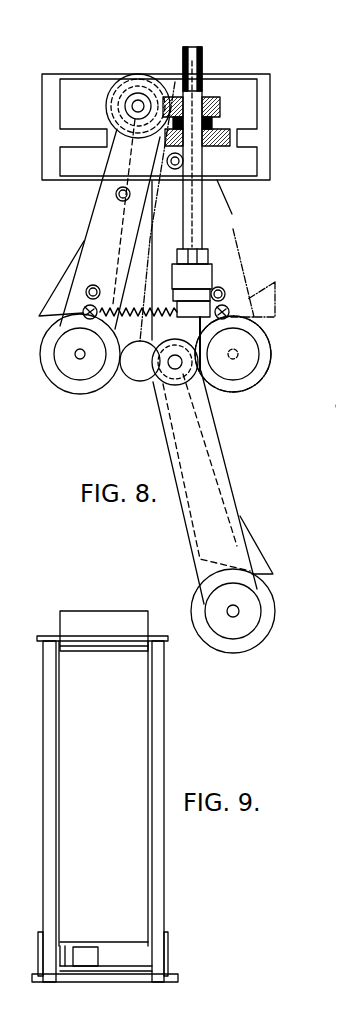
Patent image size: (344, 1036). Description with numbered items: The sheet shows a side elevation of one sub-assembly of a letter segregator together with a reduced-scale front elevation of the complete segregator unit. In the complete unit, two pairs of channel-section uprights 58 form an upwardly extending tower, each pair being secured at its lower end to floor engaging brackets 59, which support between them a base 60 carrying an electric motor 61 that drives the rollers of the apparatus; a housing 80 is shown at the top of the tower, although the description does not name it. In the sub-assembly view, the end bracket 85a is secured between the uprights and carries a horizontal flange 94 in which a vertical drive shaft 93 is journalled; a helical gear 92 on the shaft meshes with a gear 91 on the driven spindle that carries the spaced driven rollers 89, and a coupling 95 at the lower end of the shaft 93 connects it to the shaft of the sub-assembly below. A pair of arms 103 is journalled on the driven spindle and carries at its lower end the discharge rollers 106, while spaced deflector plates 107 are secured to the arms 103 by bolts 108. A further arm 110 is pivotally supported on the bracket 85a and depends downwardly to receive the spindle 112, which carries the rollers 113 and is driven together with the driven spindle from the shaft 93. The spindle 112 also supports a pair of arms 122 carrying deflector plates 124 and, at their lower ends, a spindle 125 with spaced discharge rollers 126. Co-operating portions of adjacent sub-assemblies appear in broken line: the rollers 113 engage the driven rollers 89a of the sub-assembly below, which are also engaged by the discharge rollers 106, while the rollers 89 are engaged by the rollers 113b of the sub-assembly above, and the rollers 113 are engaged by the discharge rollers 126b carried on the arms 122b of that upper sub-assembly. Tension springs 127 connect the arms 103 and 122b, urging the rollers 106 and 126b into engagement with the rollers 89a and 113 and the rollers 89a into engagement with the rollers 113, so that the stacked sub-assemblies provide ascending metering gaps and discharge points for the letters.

In FIG. 8, the end bracket 85a is at (247, 80).
In FIG. 8, the rollers 89 is at (124, 106).
In FIG. 8, the gear 91 is at (124, 78).
In FIG. 8, the vertical drive shaft 93 is at (197, 203).
In FIG. 8, the arm 110 is at (173, 223).
In FIG. 8, the helical gear 92 is at (207, 98).
In FIG. 8, the horizontal flange 94 is at (240, 130).
In FIG. 8, the rollers 113b is at (175, 83).
In FIG. 8, the arms 103 is at (90, 210).
In FIG. 8, the bolts 108 is at (123, 203).
In FIG. 8, the deflector plates 107 is at (53, 290).
In FIG. 8, the tension springs 127 is at (125, 328).
In FIG. 8, the coupling 95 is at (210, 270).
In FIG. 8, the arms 122b is at (250, 297).
In FIG. 8, the discharge rollers 106 is at (49, 388).
In FIG. 8, the driven rollers 89a is at (130, 378).
In FIG. 8, the rollers 113 is at (156, 383).
In FIG. 8, the spindle 112 is at (207, 388).
In FIG. 8, the discharge rollers 126b is at (263, 368).
In FIG. 8, the arms 122 is at (188, 518).
In FIG. 8, the deflector plates 124 is at (258, 560).
In FIG. 8, the discharge rollers 126 is at (265, 620).
In FIG. 8, the spindle 125 is at (230, 608).
In FIG. 9, the box 80 is at (108, 625).
In FIG. 9, the channel-section uprights 58 is at (48, 717).
In FIG. 9, the base 60 is at (124, 978).
In FIG. 9, the electric motor 61 is at (86, 948).
In FIG. 9, the floor engaging brackets 59 is at (42, 933).